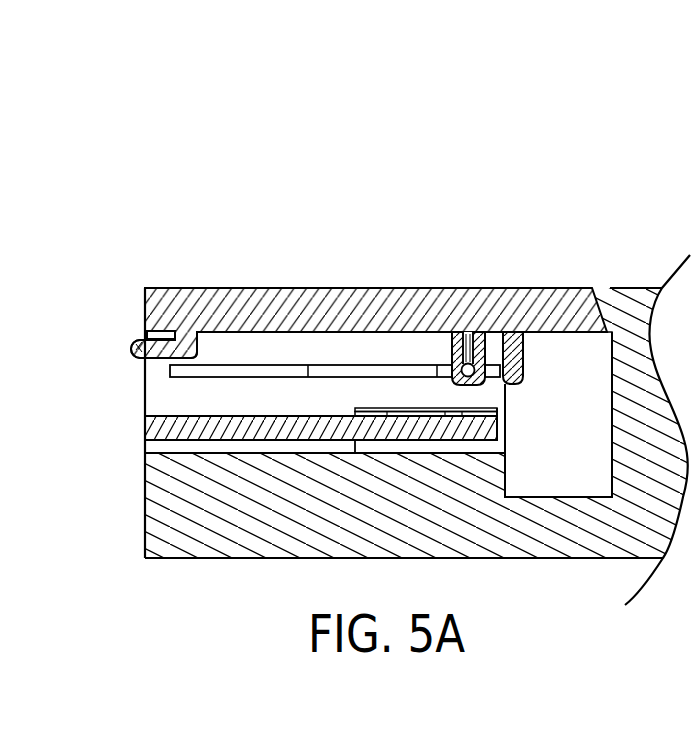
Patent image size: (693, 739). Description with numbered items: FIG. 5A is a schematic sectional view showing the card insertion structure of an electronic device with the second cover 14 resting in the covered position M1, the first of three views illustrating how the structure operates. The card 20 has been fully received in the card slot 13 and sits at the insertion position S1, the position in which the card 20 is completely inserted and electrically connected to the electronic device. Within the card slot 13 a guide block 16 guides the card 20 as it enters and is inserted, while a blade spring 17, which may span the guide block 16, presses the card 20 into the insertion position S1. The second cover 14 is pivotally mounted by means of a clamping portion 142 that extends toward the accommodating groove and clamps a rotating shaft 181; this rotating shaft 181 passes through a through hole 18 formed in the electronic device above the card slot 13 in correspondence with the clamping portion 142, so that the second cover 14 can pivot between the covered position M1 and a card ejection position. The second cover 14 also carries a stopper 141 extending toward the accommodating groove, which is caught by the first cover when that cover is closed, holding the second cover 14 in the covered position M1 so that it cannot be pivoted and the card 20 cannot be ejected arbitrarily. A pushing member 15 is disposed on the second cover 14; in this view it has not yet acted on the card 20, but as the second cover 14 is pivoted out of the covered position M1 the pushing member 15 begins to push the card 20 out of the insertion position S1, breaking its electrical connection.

The covered position M1 is at (578, 237).
The second cover 14 is at (268, 300).
The stopper 141 is at (136, 343).
The clamping portion 142 is at (475, 332).
The card slot 13 is at (180, 398).
The card 20 is at (165, 431).
The through hole 18 is at (450, 366).
The rotating shaft 181 is at (468, 362).
The pushing member 15 is at (523, 355).
The blade spring 17 is at (455, 408).
The guide block 16 is at (500, 414).
The insertion position S1 is at (497, 436).